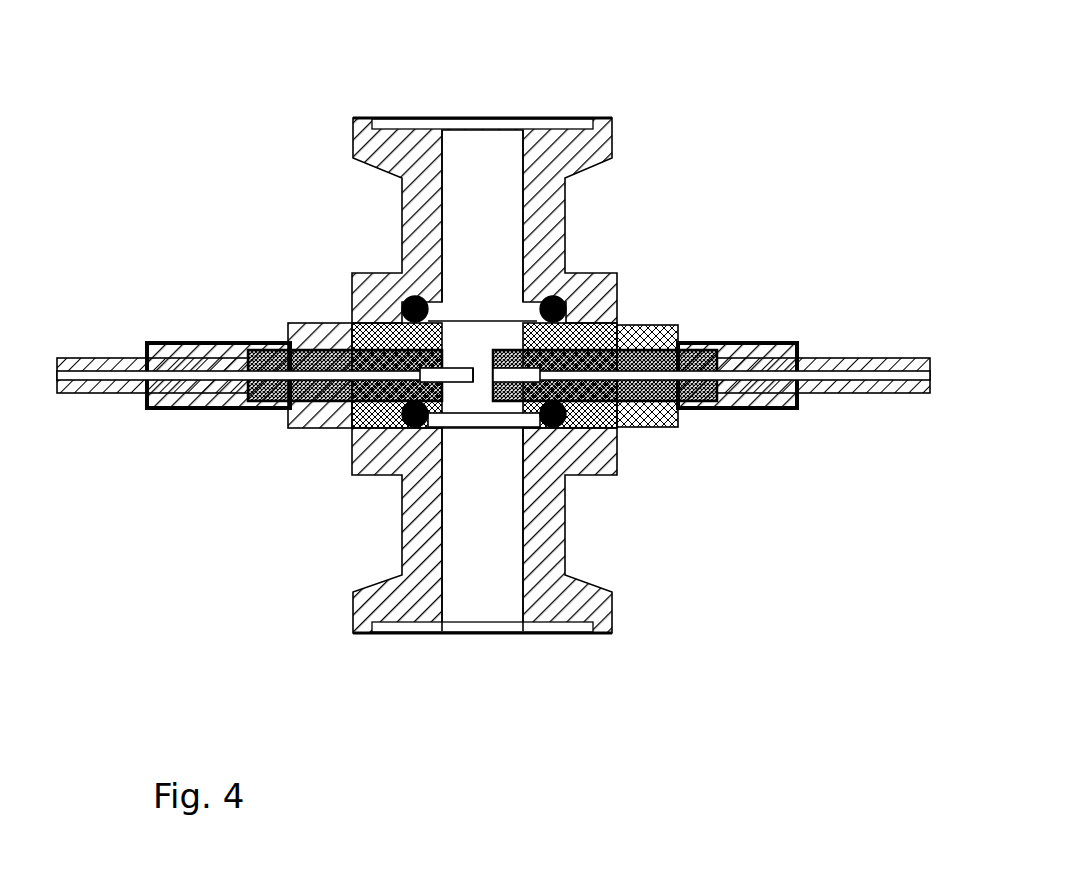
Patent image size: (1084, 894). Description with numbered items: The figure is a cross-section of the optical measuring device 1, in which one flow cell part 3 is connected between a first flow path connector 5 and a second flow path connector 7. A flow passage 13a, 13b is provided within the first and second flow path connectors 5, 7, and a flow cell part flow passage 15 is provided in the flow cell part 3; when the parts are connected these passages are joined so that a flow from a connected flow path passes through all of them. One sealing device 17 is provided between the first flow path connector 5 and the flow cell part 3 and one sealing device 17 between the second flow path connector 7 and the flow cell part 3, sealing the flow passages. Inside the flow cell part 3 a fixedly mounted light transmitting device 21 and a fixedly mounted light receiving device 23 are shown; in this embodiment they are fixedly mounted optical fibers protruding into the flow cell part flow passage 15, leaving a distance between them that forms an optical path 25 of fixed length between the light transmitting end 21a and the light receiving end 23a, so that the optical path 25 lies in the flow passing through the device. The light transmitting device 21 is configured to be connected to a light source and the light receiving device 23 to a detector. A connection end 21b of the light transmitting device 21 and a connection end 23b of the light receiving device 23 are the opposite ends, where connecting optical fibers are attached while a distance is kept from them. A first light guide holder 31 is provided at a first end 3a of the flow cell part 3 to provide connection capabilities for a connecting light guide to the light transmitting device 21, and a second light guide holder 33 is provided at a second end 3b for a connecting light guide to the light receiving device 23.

The optical measuring device 1 is at (501, 408).
The flow cell part 3 is at (290, 325).
The first end of the flow cell part 3a is at (826, 449).
The second end of the flow cell part 3b is at (159, 448).
The first flow path connector 5 is at (402, 187).
The second flow path connector 7 is at (573, 517).
The flow passage 13a is at (492, 168).
The flow passage 13b is at (490, 598).
The flow cell part flow passage 15 is at (473, 343).
The sealing device 17 is at (566, 302).
The light transmitting device 21 is at (600, 366).
The light transmitting end 21a is at (557, 352).
The connection end of the light transmitting device 21b is at (717, 407).
The light receiving device 23 is at (414, 376).
The light receiving end 23a is at (463, 382).
The connection end of the light receiving device 23b is at (250, 393).
The optical path 25 is at (491, 396).
The first light guide holder 31 is at (747, 412).
The second light guide holder 33 is at (198, 342).